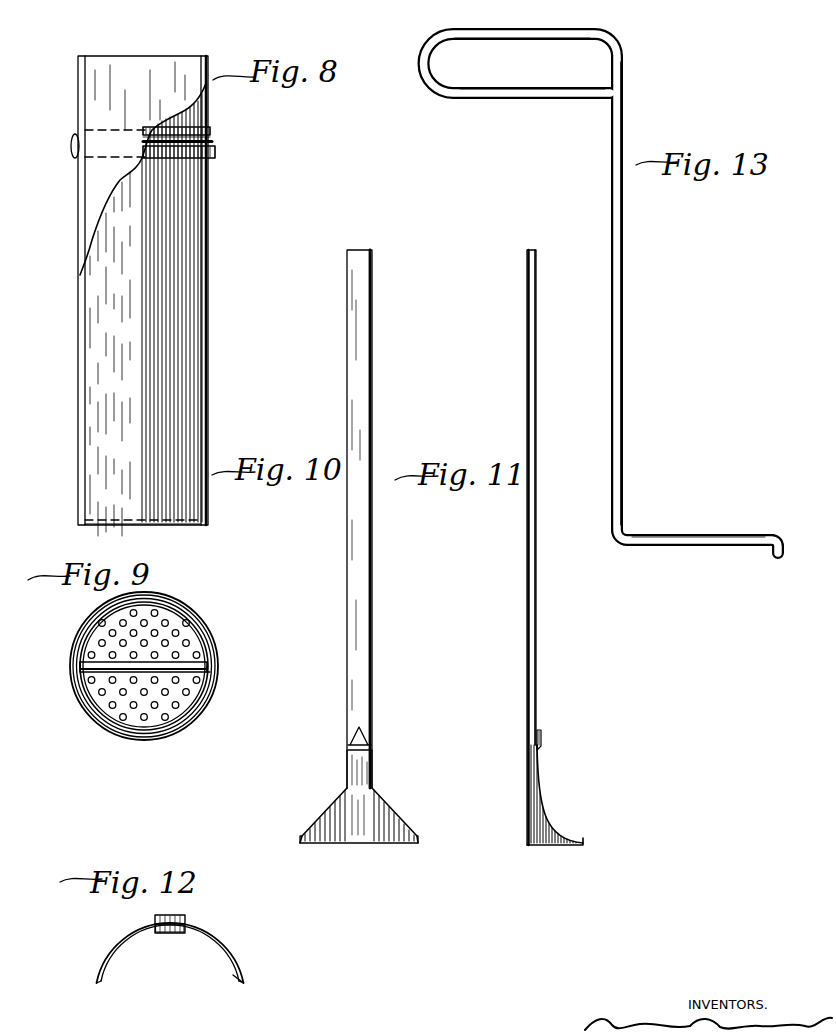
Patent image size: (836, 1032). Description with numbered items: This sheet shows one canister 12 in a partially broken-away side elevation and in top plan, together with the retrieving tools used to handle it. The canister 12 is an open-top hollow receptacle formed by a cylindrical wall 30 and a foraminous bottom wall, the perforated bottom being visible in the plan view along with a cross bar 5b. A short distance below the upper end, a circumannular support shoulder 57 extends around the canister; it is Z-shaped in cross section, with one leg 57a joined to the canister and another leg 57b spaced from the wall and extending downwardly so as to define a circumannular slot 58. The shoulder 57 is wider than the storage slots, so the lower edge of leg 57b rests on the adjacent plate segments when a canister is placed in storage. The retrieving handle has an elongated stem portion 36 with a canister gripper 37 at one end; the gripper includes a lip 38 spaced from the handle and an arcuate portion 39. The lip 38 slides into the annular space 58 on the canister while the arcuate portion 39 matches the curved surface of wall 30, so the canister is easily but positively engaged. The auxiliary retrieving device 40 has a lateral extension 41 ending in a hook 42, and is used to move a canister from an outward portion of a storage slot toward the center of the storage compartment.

In FIG. 8, the canister 12 is at (212, 238).
In FIG. 8, the cylindrical wall 30 is at (209, 285).
In FIG. 9, the cylindrical wall 30 is at (188, 640).
In FIG. 8, the circumannular support shoulder 57 is at (214, 141).
In FIG. 9, the circumannular support shoulder 57 is at (220, 691).
In FIG. 8, the leg of the Z-shaped shoulder 57a is at (212, 131).
In FIG. 9, the leg of the Z-shaped shoulder 57a is at (215, 672).
In FIG. 8, the leg of the Z-shaped shoulder 57b is at (216, 152).
In FIG. 9, the leg of the Z-shaped shoulder 57b is at (210, 652).
In FIG. 8, the circumannular slot 58 is at (72, 150).
In FIG. 8, the cross bar 5b is at (182, 527).
In FIG. 9, the cross bar 5b is at (172, 626).
In FIG. 10, the elongated stem portion 36 is at (366, 392).
In FIG. 11, the elongated stem portion 36 is at (538, 560).
In FIG. 12, the elongated stem portion 36 is at (178, 914).
In FIG. 10, the canister gripper 37 is at (374, 775).
In FIG. 11, the canister gripper 37 is at (541, 790).
In FIG. 12, the canister gripper 37 is at (237, 950).
In FIG. 10, the lip 38 is at (370, 740).
In FIG. 11, the lip 38 is at (543, 740).
In FIG. 12, the lip 38 is at (160, 934).
In FIG. 10, the arcuate portion 39 is at (390, 824).
In FIG. 11, the arcuate portion 39 is at (560, 846).
In FIG. 12, the arcuate portion 39 is at (243, 984).
In FIG. 13, the auxiliary retrieving device 40 is at (601, 315).
In FIG. 13, the lateral extension 41 is at (690, 536).
In FIG. 13, the hook 42 is at (778, 557).